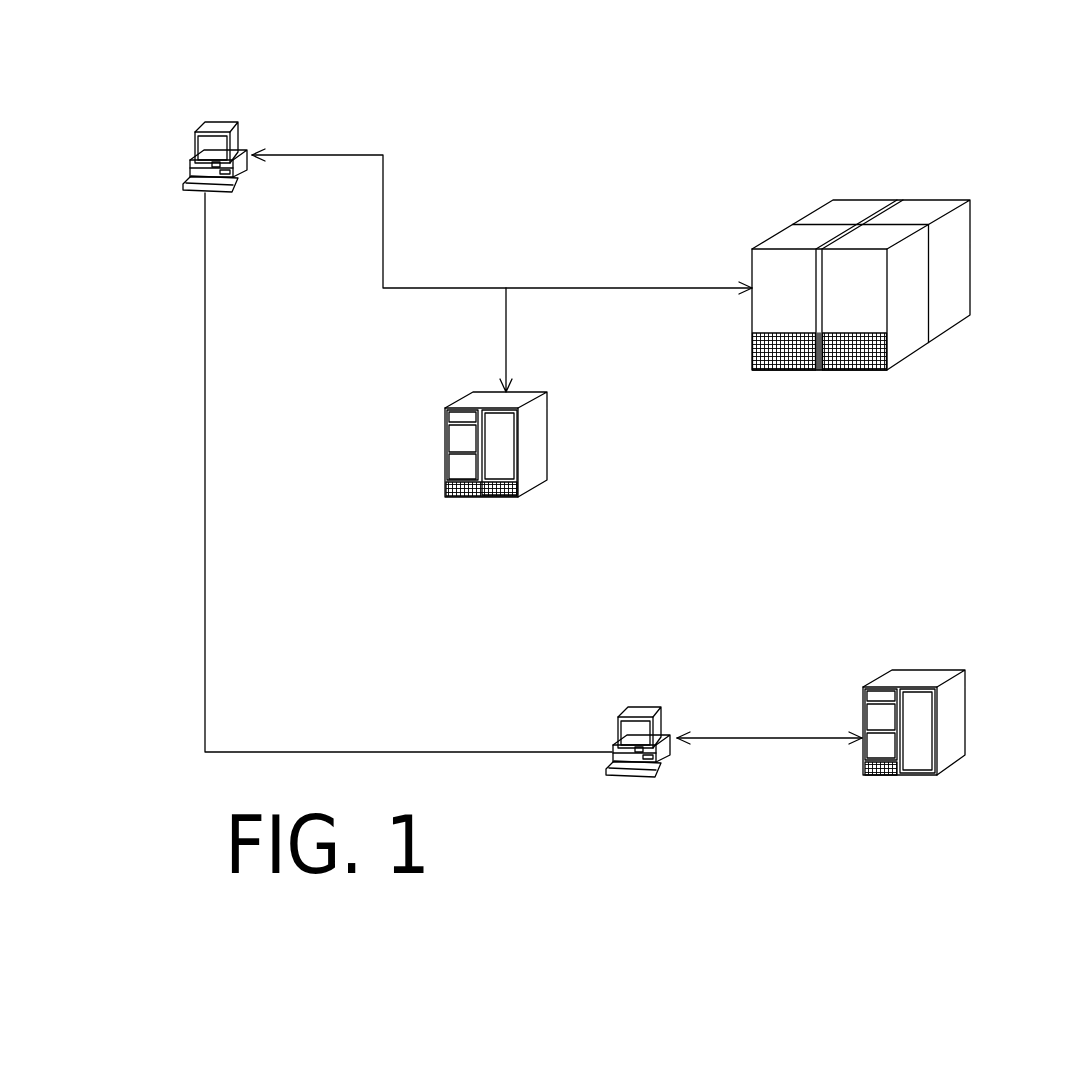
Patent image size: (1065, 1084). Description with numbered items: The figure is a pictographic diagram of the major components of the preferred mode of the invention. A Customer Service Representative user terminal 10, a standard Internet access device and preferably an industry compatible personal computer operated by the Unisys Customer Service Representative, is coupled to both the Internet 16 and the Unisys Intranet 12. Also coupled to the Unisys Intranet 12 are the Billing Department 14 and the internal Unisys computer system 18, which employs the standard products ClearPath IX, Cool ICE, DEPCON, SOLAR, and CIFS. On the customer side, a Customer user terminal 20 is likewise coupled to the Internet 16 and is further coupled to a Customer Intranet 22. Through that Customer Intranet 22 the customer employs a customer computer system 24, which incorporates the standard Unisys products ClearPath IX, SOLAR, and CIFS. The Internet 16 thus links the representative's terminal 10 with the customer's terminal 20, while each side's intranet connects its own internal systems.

The Customer Service Representative user terminal 10 is at (242, 148).
The Unisys Intranet 12 is at (383, 217).
The Billing Department 14 is at (488, 395).
The Internet 16 is at (204, 418).
The internal Unisys computer system 18 is at (847, 205).
The Customer user terminal 20 is at (633, 707).
The Customer Intranet 22 is at (708, 742).
The customer computer system 24 is at (898, 677).